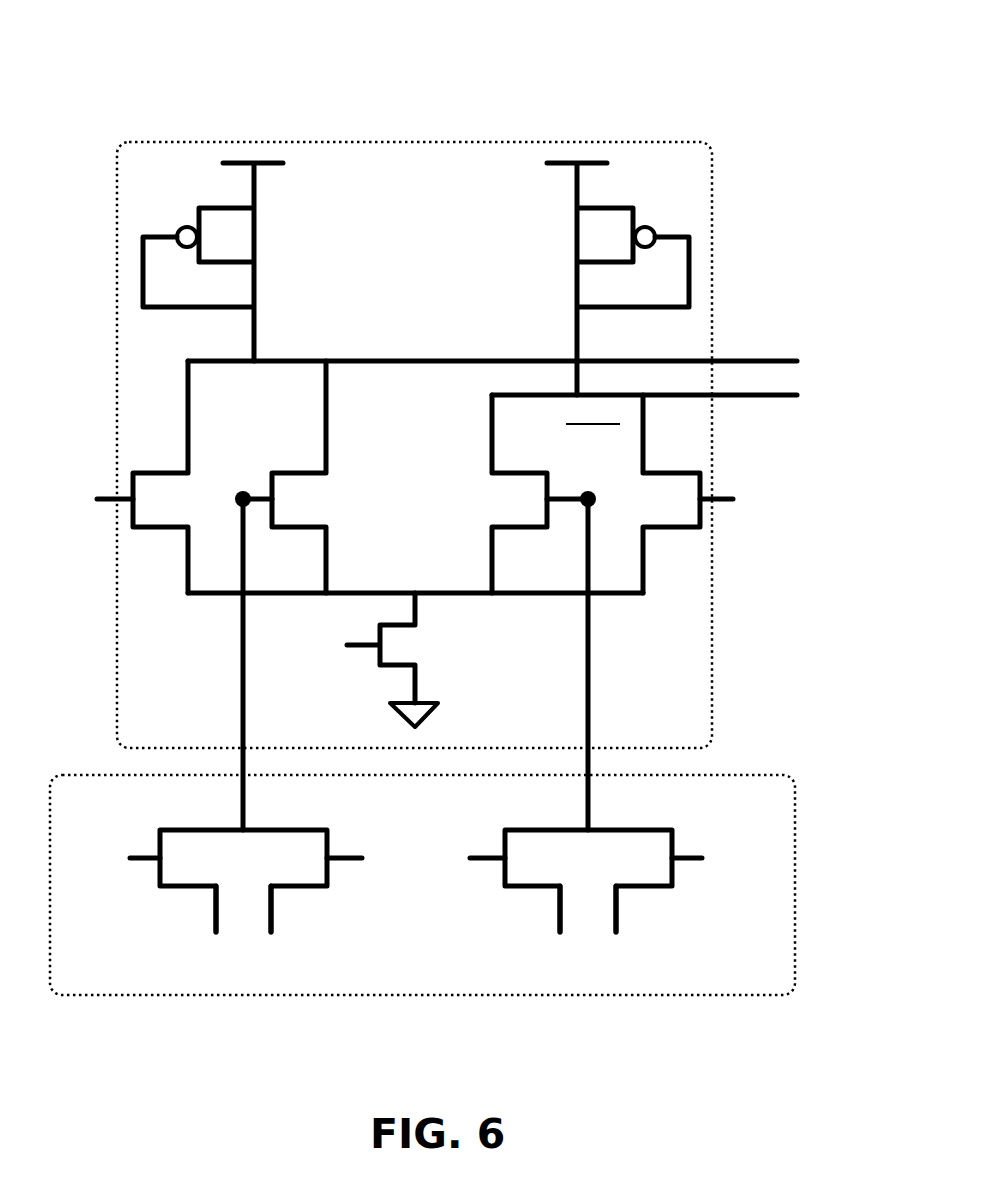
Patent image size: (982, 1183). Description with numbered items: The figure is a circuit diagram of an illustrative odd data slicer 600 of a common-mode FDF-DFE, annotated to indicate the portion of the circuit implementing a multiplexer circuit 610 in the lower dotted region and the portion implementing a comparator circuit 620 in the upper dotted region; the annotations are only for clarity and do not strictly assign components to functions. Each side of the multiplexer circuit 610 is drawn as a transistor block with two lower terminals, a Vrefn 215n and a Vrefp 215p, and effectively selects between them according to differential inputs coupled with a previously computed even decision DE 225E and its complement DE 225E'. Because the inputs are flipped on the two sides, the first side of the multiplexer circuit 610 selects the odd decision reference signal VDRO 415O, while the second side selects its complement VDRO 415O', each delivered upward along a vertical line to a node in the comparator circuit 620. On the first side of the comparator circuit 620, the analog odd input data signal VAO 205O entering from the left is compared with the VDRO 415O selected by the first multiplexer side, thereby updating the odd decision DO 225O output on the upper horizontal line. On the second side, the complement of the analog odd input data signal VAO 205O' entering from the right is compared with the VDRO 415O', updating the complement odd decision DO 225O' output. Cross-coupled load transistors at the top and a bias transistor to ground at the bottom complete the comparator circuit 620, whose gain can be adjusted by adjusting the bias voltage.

The odd data slicer 600 is at (710, 50).
The comparator circuit 620 is at (505, 141).
The multiplexer circuit 610 is at (149, 998).
The analog odd input data signal VAO 205O is at (84, 499).
The complement of the analog odd input data signal 205O' is at (748, 499).
The odd decision DO output 225O is at (522, 351).
The complement of the odd decision output 225O' is at (677, 396).
The odd decision reference signal VDRO 415O is at (229, 595).
The complement of the odd decision reference signal 415O' is at (596, 612).
The even decision DE 225E is at (419, 859).
The complement of the even decision 225E' is at (416, 859).
The Vrefn 215n is at (227, 966).
The Vrefp 215p is at (311, 966).